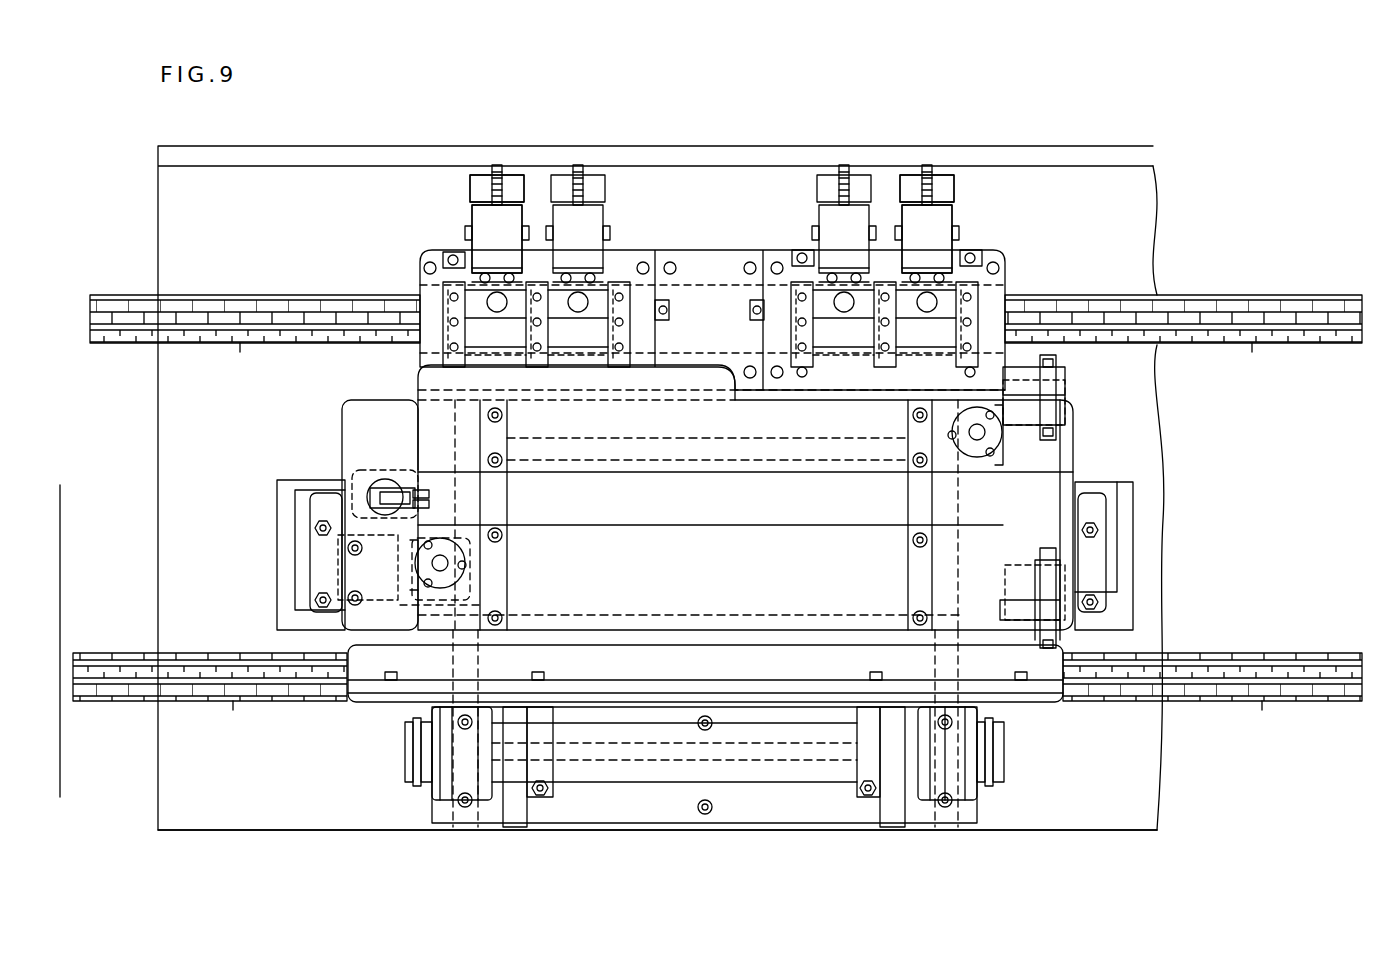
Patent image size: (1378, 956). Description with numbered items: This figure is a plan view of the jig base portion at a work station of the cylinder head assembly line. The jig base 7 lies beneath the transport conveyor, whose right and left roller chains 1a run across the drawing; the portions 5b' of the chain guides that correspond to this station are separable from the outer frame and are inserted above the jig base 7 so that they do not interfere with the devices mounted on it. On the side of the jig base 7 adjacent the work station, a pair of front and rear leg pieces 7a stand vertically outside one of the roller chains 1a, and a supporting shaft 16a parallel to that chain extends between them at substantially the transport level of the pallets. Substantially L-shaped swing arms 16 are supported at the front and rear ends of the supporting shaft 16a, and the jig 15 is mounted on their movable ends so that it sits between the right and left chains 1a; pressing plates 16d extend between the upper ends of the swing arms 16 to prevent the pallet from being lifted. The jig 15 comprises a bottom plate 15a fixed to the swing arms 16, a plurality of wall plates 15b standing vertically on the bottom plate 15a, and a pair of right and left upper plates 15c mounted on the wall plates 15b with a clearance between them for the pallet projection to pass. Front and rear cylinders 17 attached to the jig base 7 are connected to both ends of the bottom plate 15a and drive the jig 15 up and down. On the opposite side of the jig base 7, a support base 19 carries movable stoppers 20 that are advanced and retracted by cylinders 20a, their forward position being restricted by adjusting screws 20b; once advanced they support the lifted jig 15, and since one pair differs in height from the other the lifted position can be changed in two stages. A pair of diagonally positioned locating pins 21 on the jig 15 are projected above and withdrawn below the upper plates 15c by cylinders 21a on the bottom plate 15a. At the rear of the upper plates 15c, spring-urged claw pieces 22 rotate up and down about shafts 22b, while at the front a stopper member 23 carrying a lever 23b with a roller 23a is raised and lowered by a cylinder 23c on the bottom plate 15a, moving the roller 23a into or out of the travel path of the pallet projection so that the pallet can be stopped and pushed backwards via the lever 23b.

The roller chain 1a is at (250, 295).
The portion of chain guide 5b' is at (748, 540).
The jig base 7 is at (1150, 785).
The leg piece 7a is at (515, 812).
The jig 15 is at (1088, 474).
The bottom plate 15a is at (1060, 466).
The wall plate 15b is at (495, 503).
The upper plate 15c is at (580, 462).
The swing arm 16 is at (455, 775).
The supporting shaft 16a is at (652, 780).
The pressing plate 16d is at (1048, 695).
The cylinder 17 is at (318, 580).
The support base 19 is at (712, 268).
The movable stopper 20 is at (476, 324).
The cylinder 20a is at (480, 195).
The adjusting screw 20b is at (472, 186).
The locating pin 21 is at (445, 565).
The cylinder 21a is at (470, 604).
The claw piece 22 is at (1055, 390).
The shaft 22b is at (1068, 420).
The stopper member 23 is at (375, 460).
The roller 23a is at (410, 488).
The lever 23b is at (422, 490).
The cylinder 23c is at (352, 476).